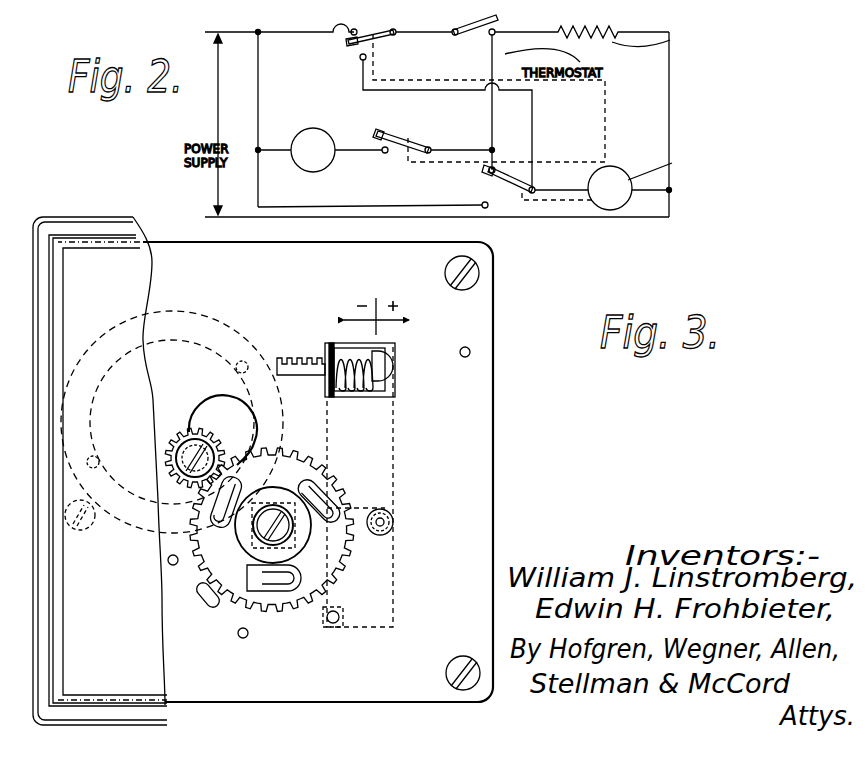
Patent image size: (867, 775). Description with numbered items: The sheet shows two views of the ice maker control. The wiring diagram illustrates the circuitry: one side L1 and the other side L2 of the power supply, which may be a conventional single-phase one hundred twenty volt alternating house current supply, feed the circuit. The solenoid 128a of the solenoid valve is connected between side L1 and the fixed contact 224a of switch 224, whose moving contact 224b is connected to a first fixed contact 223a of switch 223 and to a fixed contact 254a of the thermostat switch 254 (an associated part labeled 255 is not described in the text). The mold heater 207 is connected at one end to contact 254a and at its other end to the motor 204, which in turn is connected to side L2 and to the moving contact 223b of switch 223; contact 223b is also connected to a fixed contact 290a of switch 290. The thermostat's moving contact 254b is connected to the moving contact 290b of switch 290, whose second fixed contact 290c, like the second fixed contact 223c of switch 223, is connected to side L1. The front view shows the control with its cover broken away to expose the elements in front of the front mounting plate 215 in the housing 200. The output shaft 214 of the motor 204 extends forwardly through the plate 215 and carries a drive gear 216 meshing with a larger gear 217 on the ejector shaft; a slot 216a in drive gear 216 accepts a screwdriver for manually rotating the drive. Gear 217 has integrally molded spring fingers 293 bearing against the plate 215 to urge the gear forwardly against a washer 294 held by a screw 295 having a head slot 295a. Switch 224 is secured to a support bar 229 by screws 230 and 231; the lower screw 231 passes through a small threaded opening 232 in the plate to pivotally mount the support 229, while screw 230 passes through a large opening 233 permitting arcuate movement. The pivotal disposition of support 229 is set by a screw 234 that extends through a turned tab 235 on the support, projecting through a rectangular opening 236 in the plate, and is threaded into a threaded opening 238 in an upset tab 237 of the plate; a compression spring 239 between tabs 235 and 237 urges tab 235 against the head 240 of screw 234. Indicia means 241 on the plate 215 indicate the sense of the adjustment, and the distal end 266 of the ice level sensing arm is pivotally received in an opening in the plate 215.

In FIG. 2, the power supply side L1 is at (277, 20).
In FIG. 2, the power supply side L2 is at (437, 228).
In FIG. 2, the solenoid 128a is at (311, 128).
In FIG. 2, the switch 290 is at (372, 27).
In FIG. 2, the fixed contact 290a is at (360, 59).
In FIG. 2, the moving contact 290b is at (383, 36).
In FIG. 2, the second fixed contact 290c is at (317, 45).
In FIG. 2, the thermostat switch blade 255 is at (474, 17).
In FIG. 2, the thermostat switch 254 is at (506, 18).
In FIG. 2, the fixed contact 254a is at (494, 36).
In FIG. 2, the moving contact 254b is at (458, 36).
In FIG. 2, the mold heater 207 is at (600, 28).
In FIG. 2, the snap acting switch 224 is at (402, 132).
In FIG. 3, the snap acting switch 224 is at (393, 492).
In FIG. 2, the fixed contact 224a is at (386, 153).
In FIG. 2, the moving contact 224b is at (384, 131).
In FIG. 2, the snap acting switch 223 is at (520, 205).
In FIG. 2, the first fixed contact 223a is at (496, 168).
In FIG. 2, the moving contact 223b is at (528, 188).
In FIG. 2, the second fixed contact 223c is at (482, 204).
In FIG. 2, the drive motor 204 is at (612, 168).
In FIG. 3, the drive motor 204 is at (173, 341).
In FIG. 3, the housing 200 is at (98, 228).
In FIG. 3, the front mounting plate 215 is at (480, 413).
In FIG. 3, the drive gear 216 is at (192, 432).
In FIG. 3, the slot 216a is at (195, 455).
In FIG. 3, the output shaft 214 is at (176, 457).
In FIG. 3, the larger gear 217 is at (308, 472).
In FIG. 3, the head slot 295a is at (278, 510).
In FIG. 3, the washer 294 is at (250, 517).
In FIG. 3, the spring fingers 293 is at (322, 518).
In FIG. 3, the screw 295 is at (238, 530).
In FIG. 3, the rectangular opening 236 is at (396, 384).
In FIG. 3, the compression spring 239 is at (343, 376).
In FIG. 3, the screw head 240 is at (388, 366).
In FIG. 3, the turned tab 235 is at (400, 352).
In FIG. 3, the upset tab 237 is at (326, 390).
In FIG. 3, the adjusting screw 234 is at (284, 358).
In FIG. 3, the threaded opening 238 is at (312, 358).
In FIG. 3, the indicia means 241 is at (368, 296).
In FIG. 3, the distal end 266 is at (470, 352).
In FIG. 3, the support bar 229 is at (393, 466).
In FIG. 3, the screw 230 is at (393, 520).
In FIG. 3, the large opening 233 is at (392, 530).
In FIG. 3, the lower screw 231 is at (343, 615).
In FIG. 3, the small threaded opening 232 is at (333, 623).